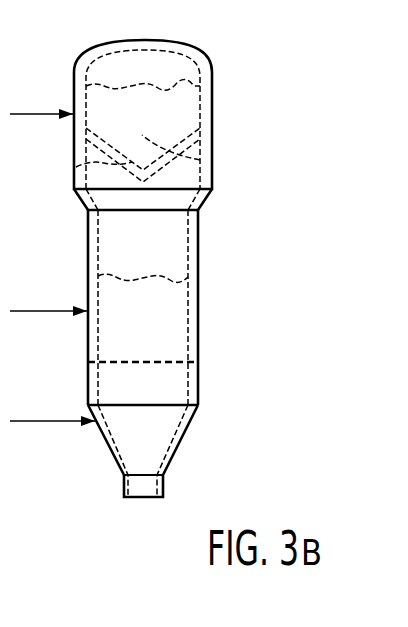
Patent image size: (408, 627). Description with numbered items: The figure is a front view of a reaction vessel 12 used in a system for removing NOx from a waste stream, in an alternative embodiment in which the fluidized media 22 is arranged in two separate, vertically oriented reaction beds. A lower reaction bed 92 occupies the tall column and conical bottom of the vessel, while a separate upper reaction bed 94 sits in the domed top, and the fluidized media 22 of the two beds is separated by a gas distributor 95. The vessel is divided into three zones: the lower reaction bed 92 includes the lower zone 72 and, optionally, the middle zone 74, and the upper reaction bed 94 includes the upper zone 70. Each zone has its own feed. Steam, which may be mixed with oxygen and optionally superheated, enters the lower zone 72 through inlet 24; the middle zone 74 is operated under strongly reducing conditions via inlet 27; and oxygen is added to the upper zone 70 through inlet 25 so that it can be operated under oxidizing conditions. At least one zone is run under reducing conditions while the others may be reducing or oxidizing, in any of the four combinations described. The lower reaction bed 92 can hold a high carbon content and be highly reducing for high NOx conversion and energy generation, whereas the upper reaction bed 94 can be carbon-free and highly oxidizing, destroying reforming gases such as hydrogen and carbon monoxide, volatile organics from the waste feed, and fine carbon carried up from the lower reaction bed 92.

The reaction vessel 12 is at (146, 40).
The inlet 25 is at (40, 113).
The upper reaction bed 94 is at (213, 115).
The gas distributor 95 is at (76, 167).
The upper zone 70 is at (200, 160).
The inlet 27 is at (23, 310).
The middle zone 74 is at (153, 308).
The fluidized media 22 is at (107, 383).
The lower zone 72 is at (150, 440).
The inlet 24 is at (25, 423).
The lower reaction bed 92 is at (107, 447).